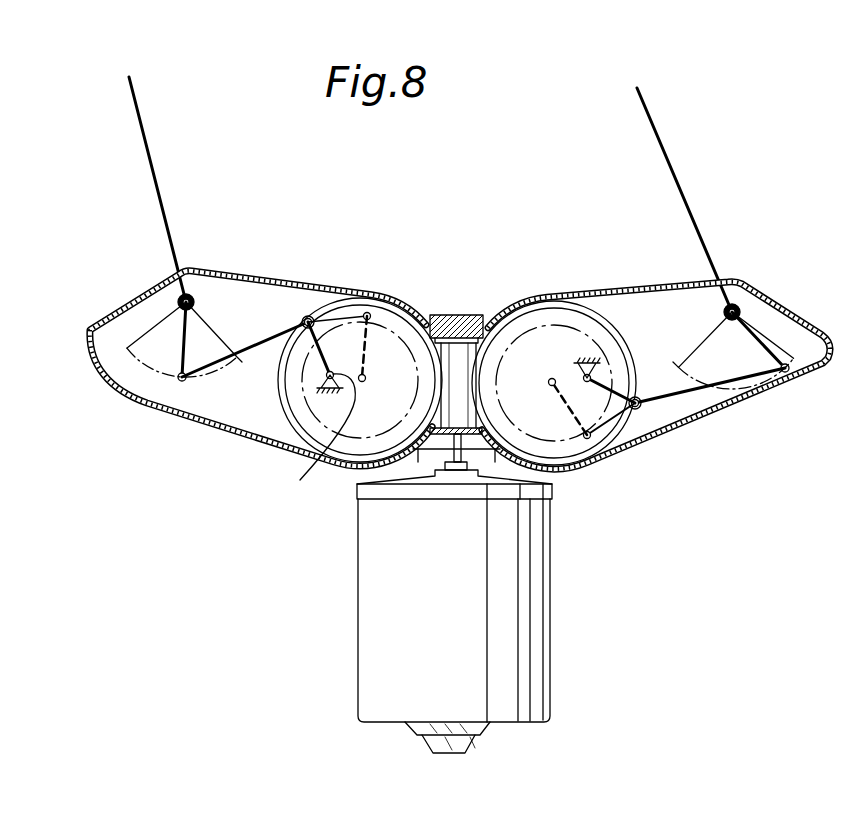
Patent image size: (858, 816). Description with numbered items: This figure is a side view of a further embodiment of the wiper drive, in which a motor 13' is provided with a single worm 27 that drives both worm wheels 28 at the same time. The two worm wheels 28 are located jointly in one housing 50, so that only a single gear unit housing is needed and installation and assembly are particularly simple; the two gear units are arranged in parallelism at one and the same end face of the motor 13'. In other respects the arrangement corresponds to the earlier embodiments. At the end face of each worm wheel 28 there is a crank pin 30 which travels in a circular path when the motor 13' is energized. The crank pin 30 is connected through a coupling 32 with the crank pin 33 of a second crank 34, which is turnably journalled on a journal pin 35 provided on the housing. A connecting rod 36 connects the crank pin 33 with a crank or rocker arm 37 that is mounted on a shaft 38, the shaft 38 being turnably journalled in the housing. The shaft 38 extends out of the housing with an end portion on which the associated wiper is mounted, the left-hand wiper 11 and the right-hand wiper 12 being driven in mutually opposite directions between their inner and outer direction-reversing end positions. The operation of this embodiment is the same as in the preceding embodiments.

The wiper 11 is at (143, 128).
The wiper 12 is at (658, 134).
The motor 13' is at (414, 607).
The worm 27 is at (474, 318).
The worm wheel 28 is at (398, 318).
The crank pin 30 is at (369, 312).
The coupling 32 is at (342, 320).
The crank pin 33 is at (308, 316).
The second crank 34 is at (306, 326).
The journal pin 35 is at (331, 379).
The connecting rod 36 is at (210, 350).
The rocker arm 37 is at (180, 357).
The shaft 38 is at (221, 273).
The housing 50 is at (280, 280).